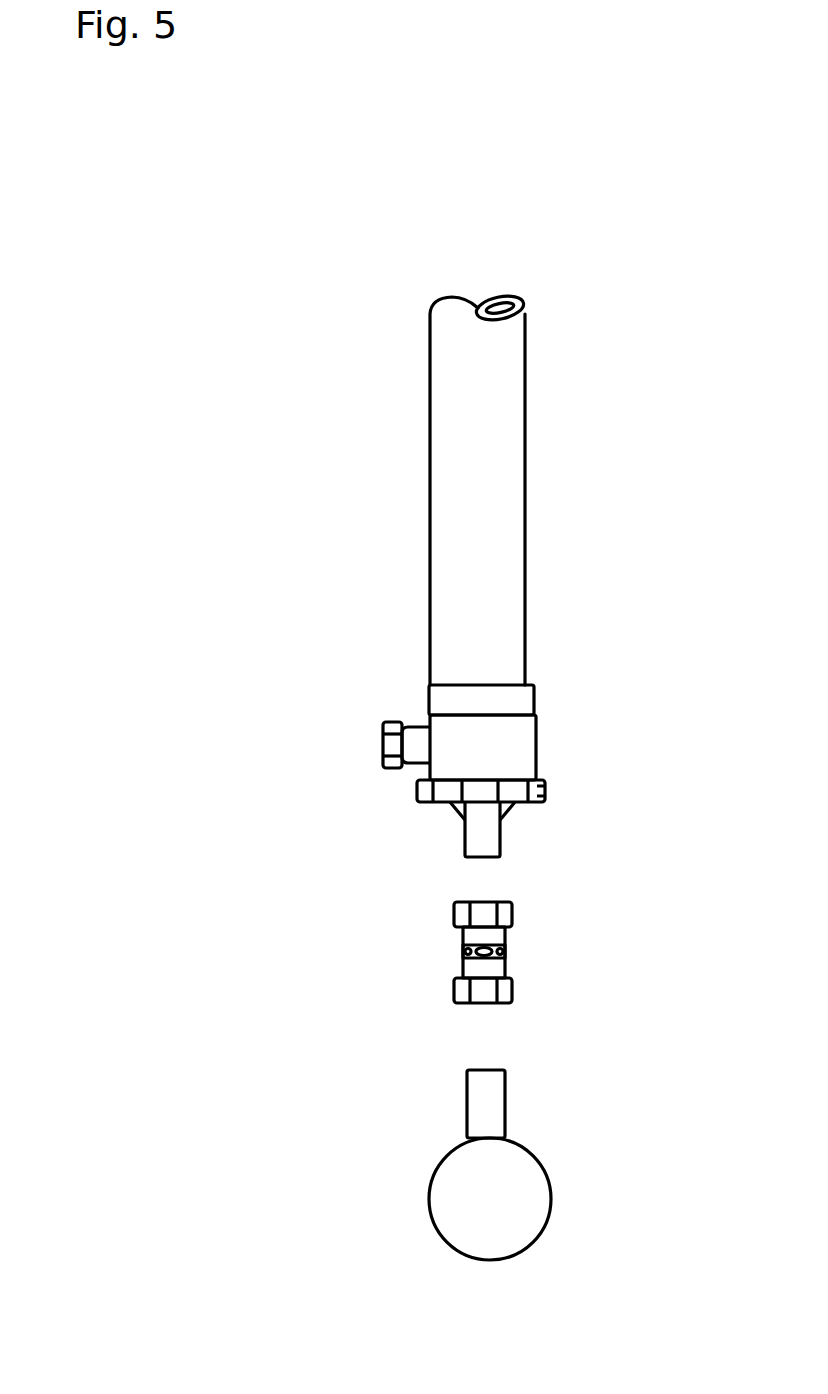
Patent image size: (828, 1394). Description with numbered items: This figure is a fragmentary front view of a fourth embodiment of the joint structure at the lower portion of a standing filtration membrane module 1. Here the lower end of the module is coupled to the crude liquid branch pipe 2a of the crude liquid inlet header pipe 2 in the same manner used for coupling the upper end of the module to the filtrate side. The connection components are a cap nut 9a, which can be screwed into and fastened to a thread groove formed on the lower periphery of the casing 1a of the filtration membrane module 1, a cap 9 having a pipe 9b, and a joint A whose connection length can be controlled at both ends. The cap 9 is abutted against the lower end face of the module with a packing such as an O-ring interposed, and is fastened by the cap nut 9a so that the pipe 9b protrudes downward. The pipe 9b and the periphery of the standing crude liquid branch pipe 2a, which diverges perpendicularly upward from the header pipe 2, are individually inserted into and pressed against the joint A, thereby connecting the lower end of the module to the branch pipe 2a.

The filtration membrane module 1 is at (540, 392).
The casing 1a is at (537, 740).
The cap 9 is at (483, 767).
The cap nut 9a is at (545, 790).
The pipe 9b is at (500, 835).
The joint A is at (528, 950).
The crude liquid inlet header pipe 2 is at (427, 1186).
The crude liquid branch pipe 2a is at (467, 1113).